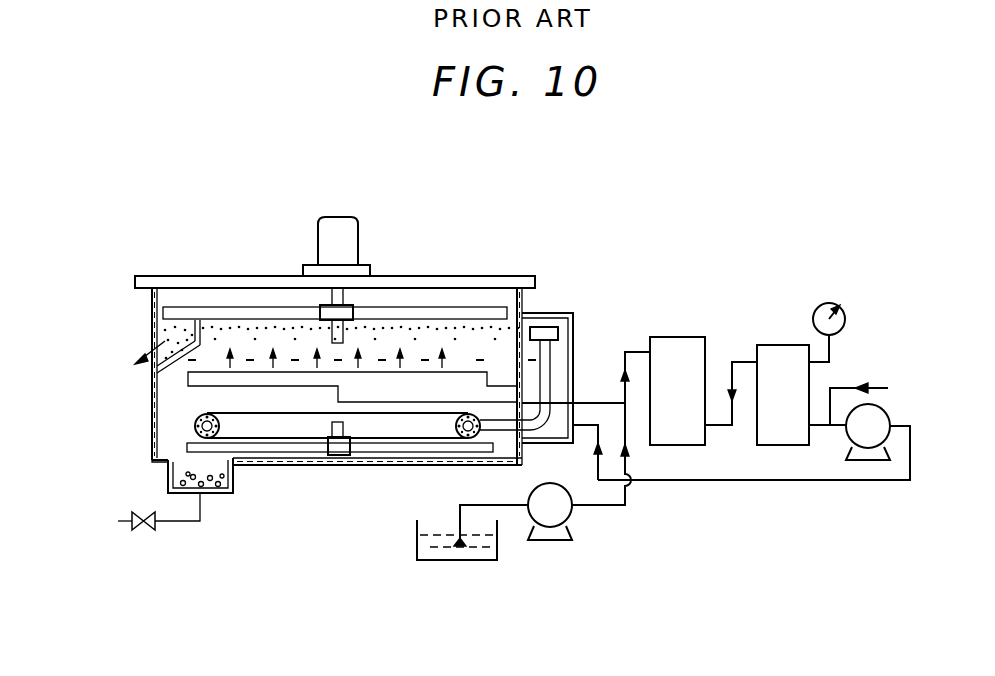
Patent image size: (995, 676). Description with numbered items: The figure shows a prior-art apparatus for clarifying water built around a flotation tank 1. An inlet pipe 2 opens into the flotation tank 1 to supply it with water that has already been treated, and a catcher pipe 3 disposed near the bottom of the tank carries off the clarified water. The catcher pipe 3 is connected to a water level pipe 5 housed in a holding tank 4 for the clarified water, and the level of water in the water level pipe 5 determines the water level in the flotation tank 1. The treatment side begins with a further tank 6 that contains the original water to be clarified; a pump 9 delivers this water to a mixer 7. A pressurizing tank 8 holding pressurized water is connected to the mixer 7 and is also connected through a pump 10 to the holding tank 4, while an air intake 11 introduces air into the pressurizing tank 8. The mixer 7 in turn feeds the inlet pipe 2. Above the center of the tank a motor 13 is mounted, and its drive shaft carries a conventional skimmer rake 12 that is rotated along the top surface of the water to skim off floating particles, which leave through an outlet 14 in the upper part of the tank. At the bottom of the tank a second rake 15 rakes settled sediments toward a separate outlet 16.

The flotation tank 1 is at (152, 429).
The inlet pipe 2 is at (398, 383).
The catcher pipe 3 is at (275, 428).
The holding tank 4 is at (572, 380).
The water level pipe 5 is at (560, 343).
The further tank 6 is at (437, 556).
The mixer 7 is at (676, 337).
The pressurizing tank 8 is at (779, 345).
The pump 9 is at (566, 518).
The pump 10 is at (885, 409).
The air intake 11 is at (872, 385).
The skimmer rake 12 is at (235, 307).
The motor 13 is at (358, 224).
The outlet 14 is at (152, 343).
The second rake 15 is at (312, 452).
The outlet 16 is at (168, 477).